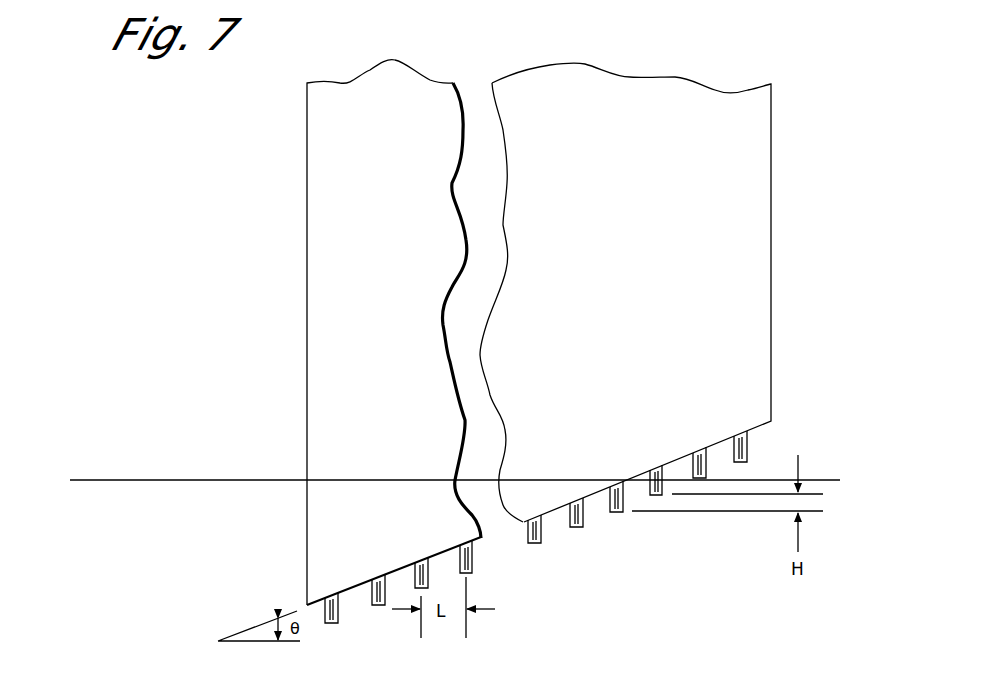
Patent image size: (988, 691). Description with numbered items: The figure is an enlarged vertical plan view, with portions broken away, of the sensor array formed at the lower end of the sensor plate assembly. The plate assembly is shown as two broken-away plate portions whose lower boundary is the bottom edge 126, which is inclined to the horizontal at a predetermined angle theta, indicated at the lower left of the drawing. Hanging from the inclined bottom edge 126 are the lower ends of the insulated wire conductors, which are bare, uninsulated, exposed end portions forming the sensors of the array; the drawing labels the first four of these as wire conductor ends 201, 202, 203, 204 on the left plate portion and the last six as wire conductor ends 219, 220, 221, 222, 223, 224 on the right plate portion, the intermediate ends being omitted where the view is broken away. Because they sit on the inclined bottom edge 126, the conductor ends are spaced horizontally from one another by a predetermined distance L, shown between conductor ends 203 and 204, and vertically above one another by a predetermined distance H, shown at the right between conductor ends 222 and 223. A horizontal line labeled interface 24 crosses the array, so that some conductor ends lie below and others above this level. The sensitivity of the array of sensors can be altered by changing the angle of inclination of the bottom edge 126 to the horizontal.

The interface 24 is at (451, 466).
The bottom edge 126 is at (678, 455).
The wire conductor end 201 is at (331, 624).
The wire conductor end 202 is at (378, 606).
The wire conductor end 203 is at (429, 560).
The wire conductor end 204 is at (473, 558).
The wire conductor end 219 is at (535, 544).
The wire conductor end 220 is at (577, 528).
The wire conductor end 221 is at (623, 500).
The wire conductor end 222 is at (642, 474).
The wire conductor end 223 is at (706, 465).
The wire conductor end 224 is at (747, 450).